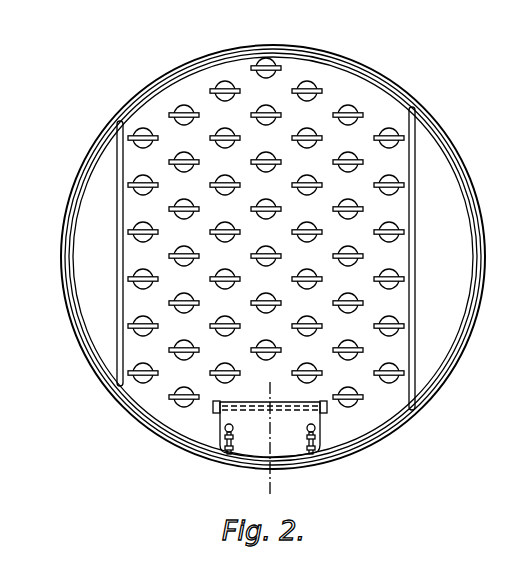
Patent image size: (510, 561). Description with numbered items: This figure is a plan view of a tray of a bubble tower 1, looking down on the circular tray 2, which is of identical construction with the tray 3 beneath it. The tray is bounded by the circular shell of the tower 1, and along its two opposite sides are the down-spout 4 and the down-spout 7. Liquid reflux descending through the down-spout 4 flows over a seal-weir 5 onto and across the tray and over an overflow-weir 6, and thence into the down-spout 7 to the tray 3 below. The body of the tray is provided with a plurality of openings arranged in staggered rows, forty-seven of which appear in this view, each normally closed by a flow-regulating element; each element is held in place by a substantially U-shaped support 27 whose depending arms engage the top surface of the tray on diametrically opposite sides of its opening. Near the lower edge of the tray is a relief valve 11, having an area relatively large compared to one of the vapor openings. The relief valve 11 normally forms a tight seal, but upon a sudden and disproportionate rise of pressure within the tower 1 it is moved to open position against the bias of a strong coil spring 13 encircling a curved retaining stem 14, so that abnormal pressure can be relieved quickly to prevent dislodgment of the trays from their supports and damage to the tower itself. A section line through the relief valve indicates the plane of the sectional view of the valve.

The bubble tower 1 is at (405, 427).
The tray 2 is at (152, 410).
The tray 3 is at (300, 492).
The down-spout 4 is at (95, 290).
The seal-weir 5 is at (121, 220).
The overflow-weir 6 is at (413, 219).
The down-spout 7 is at (455, 312).
The relief valve 11 is at (290, 448).
The coil spring 13 is at (220, 452).
The retaining stem 14 is at (224, 428).
The U-shaped support 27 is at (305, 82).